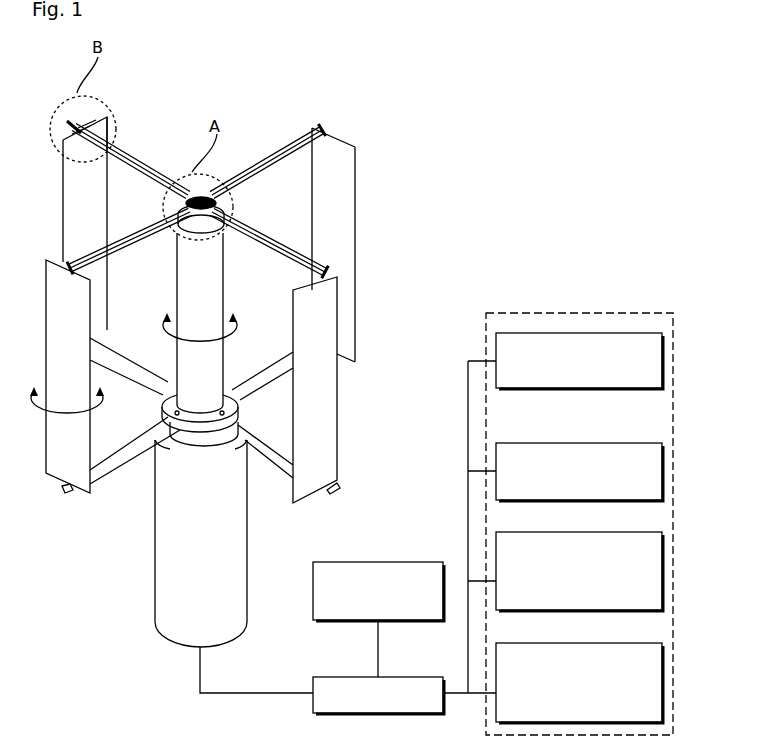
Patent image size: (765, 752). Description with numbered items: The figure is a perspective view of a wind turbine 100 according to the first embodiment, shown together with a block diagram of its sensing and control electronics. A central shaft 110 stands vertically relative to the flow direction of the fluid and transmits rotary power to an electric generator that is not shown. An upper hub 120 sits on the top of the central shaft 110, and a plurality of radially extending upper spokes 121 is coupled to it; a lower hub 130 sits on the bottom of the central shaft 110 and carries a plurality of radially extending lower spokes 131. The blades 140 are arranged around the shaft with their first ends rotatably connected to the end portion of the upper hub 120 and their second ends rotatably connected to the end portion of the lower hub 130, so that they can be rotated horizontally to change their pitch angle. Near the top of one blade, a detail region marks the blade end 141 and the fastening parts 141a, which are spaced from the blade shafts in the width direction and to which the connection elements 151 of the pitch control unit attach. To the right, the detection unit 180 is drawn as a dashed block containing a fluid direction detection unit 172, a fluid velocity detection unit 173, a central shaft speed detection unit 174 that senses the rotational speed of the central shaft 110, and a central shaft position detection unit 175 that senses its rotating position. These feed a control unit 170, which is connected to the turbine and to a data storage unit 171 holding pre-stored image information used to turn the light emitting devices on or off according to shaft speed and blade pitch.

The wind turbine 100 is at (383, 102).
The central shaft 110 is at (180, 372).
The upper hub 120 is at (240, 197).
The upper spokes 121 is at (293, 147).
The lower hub 130 is at (242, 390).
The lower spokes 131 is at (288, 467).
The blades 140 is at (335, 245).
The blade end portion 141 is at (78, 128).
The fastening parts 141a is at (106, 127).
The connection elements 151 is at (118, 140).
The control unit 170 is at (314, 679).
The data storage unit 171 is at (314, 564).
The fluid direction detection unit 172 is at (664, 361).
The fluid velocity detection unit 173 is at (664, 471).
The central shaft speed detection unit 174 is at (664, 581).
The central shaft position detection unit 175 is at (664, 693).
The detection unit 180 is at (583, 313).